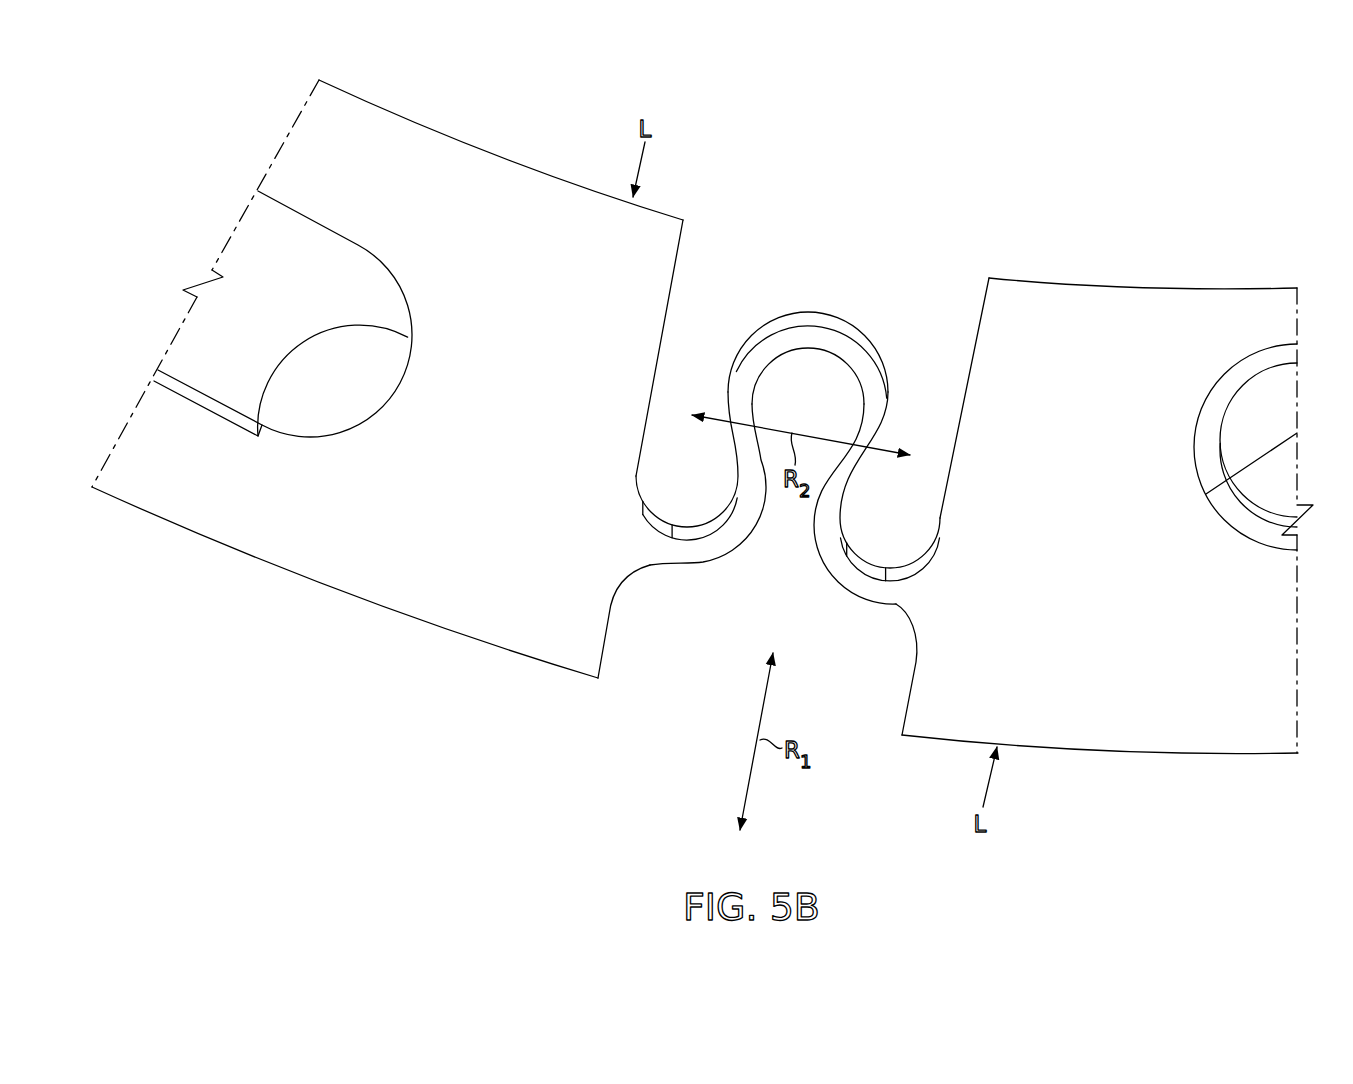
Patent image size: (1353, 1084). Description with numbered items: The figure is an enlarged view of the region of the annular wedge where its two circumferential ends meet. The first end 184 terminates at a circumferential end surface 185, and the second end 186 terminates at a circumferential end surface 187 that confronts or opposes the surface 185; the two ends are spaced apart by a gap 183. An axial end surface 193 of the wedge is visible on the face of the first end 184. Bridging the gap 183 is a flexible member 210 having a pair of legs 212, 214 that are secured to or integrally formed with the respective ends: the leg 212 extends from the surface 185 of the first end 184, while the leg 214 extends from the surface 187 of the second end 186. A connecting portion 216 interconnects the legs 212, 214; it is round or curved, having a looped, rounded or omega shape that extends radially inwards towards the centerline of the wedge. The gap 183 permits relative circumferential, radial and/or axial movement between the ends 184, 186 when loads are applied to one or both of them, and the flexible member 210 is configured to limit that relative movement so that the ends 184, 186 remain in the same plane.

The circumferential end surface 187 is at (409, 424).
The circumferential end surface 185 is at (1103, 529).
The flexible member 210 is at (788, 416).
The connecting portion 216 is at (823, 333).
The leg 214 is at (703, 553).
The leg 212 is at (862, 590).
The axial end surface 193 is at (1138, 618).
The second end 186 is at (590, 700).
The gap 183 is at (710, 690).
The first end 184 is at (910, 753).